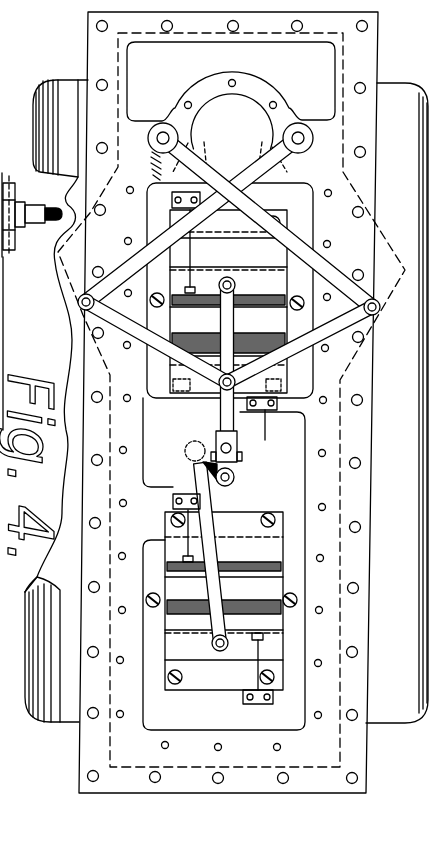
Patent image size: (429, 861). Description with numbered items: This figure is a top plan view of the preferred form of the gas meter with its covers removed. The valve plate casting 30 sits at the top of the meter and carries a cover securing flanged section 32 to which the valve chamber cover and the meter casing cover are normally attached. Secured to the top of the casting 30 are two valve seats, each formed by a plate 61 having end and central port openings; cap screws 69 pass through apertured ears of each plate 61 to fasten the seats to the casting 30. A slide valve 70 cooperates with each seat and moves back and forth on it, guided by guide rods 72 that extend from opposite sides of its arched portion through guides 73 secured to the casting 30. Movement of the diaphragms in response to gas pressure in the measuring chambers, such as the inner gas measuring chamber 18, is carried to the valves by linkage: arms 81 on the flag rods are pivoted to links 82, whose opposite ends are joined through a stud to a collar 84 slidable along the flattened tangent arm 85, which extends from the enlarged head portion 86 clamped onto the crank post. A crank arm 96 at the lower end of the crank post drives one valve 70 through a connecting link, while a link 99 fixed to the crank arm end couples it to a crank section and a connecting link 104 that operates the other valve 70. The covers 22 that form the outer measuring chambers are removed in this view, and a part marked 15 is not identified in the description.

The switch mechanism 15 is at (0, 352).
The inner gas measuring chamber 18 is at (0, 540).
The cover 22 is at (72, 97).
The valve plate casting 30 is at (231, 400).
The cover securing flanged section 32 is at (106, 760).
The plate 61 is at (232, 228).
The cap screw 69 is at (280, 230).
The slide valve 70 is at (240, 300).
The guide rod 72 is at (172, 200).
The guide 73 is at (152, 146).
The arm 81 is at (243, 158).
The link 82 is at (148, 380).
The collar 84 is at (16, 250).
The tangent arm 85 is at (35, 207).
The enlarged head portion 86 is at (240, 450).
The crank arm 96 is at (220, 322).
The link 99 is at (190, 453).
The connecting link 104 is at (228, 570).